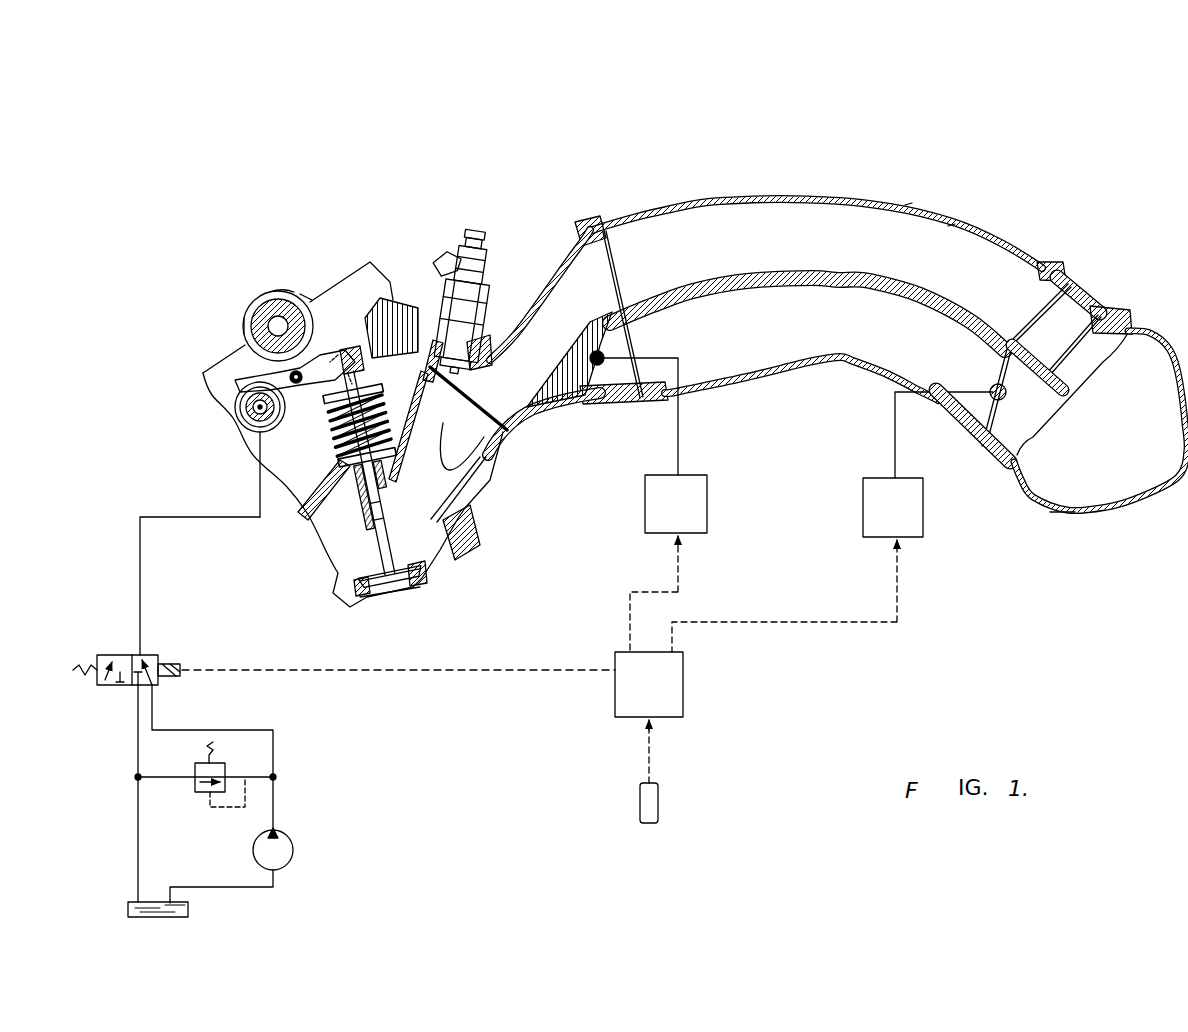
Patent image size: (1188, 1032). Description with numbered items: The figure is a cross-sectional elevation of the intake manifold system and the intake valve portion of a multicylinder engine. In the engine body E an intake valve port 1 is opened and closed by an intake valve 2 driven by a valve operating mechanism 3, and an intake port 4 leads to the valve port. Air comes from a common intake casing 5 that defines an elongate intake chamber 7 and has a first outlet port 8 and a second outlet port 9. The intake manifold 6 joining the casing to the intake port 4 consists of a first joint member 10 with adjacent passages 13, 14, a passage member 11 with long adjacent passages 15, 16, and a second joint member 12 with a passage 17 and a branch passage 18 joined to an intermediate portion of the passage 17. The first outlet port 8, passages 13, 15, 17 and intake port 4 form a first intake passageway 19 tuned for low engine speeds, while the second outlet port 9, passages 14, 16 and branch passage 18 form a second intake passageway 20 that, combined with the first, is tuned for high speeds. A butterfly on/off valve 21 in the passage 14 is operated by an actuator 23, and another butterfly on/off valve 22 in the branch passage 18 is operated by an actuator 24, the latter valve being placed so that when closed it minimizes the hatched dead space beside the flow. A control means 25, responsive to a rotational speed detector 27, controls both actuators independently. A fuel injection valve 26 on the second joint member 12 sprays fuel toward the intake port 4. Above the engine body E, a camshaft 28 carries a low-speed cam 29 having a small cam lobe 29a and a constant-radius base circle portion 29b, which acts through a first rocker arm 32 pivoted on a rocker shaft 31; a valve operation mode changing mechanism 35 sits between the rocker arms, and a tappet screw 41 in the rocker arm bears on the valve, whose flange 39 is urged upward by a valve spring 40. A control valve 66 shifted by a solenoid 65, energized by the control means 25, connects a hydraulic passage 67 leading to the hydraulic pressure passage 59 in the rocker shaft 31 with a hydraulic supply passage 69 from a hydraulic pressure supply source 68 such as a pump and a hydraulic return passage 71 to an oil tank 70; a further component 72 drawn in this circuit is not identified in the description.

The intake valve port 1 is at (400, 594).
The intake valve 2 is at (380, 545).
The valve operating mechanism 3 is at (232, 357).
The intake port 4 is at (487, 440).
The intake casing 5 is at (1062, 514).
The intake manifold 6 is at (848, 195).
The intake chamber 7 is at (1118, 466).
The first outlet port 8 is at (1085, 366).
The second outlet port 9 is at (1033, 430).
The first joint member 10 is at (1075, 302).
The passage member 11 is at (905, 205).
The second joint member 12 is at (555, 268).
The passage 13 is at (1100, 308).
The passage 14 is at (962, 432).
The passage 15 is at (948, 226).
The passage 16 is at (829, 360).
The passage 17 is at (533, 302).
The branch passage 18 is at (598, 404).
The first intake passageway 19 is at (796, 249).
The second intake passageway 20 is at (796, 330).
The butterfly on/off valve 21 is at (988, 366).
The butterfly on/off valve 22 is at (592, 340).
The actuator 23 is at (903, 520).
The actuator 24 is at (686, 517).
The control means 25 is at (659, 697).
The fuel injection valve 26 is at (448, 305).
The rotational speed detector 27 is at (658, 803).
The camshaft 28 is at (262, 306).
The low-speed cam 29 is at (288, 290).
The cam lobe 29a is at (310, 296).
The base circle portion 29b is at (244, 326).
The rocker shaft 31 is at (245, 405).
The first rocker arm 32 is at (292, 385).
The valve operation mode changing mechanism 35 is at (262, 382).
The flange 39 is at (380, 396).
The valve spring 40 is at (348, 432).
The tappet screw 41 is at (350, 338).
The hydraulic pressure passage 59 is at (246, 428).
The solenoid 65 is at (172, 662).
The control valve 66 is at (130, 657).
The hydraulic passage 67 is at (175, 518).
The hydraulic pressure supply source 68 is at (293, 845).
The hydraulic supply passage 69 is at (213, 733).
The oil tank 70 is at (130, 905).
The hydraulic return passage 71 is at (138, 810).
The pressure relief valve 72 is at (197, 792).
The engine body E is at (468, 522).